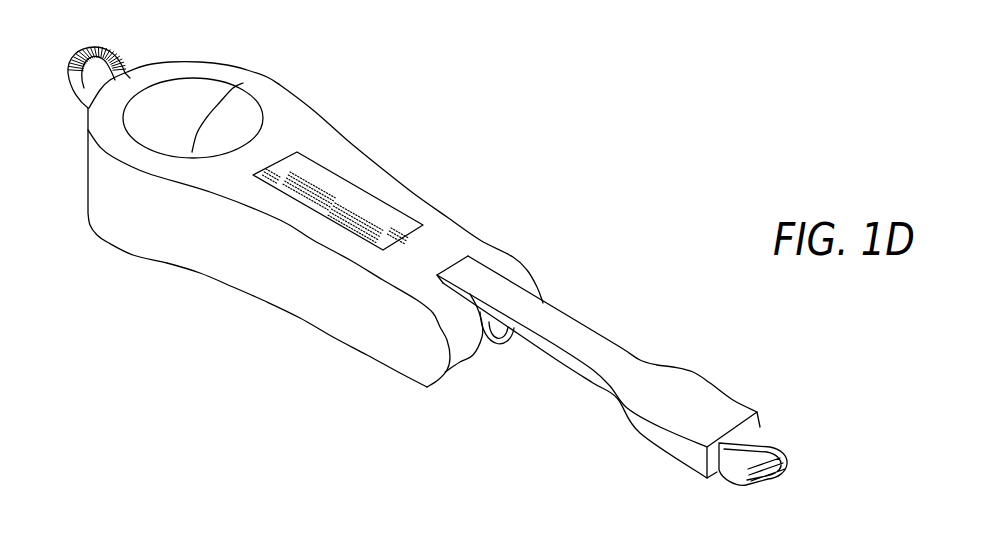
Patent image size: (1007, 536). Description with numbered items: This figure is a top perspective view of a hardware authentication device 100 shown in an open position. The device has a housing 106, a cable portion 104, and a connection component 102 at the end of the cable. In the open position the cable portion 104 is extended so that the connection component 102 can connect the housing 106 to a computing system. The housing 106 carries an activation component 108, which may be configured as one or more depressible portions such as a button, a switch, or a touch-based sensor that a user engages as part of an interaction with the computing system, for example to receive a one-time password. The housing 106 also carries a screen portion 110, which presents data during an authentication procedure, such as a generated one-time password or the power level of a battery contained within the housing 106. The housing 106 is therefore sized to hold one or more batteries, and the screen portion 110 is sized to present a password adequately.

The hardware authentication device 100 is at (588, 172).
The connection component 102 is at (752, 457).
The cable portion 104 is at (577, 320).
The housing 106 is at (198, 240).
The activation component 108 is at (227, 115).
The screen portion 110 is at (340, 188).